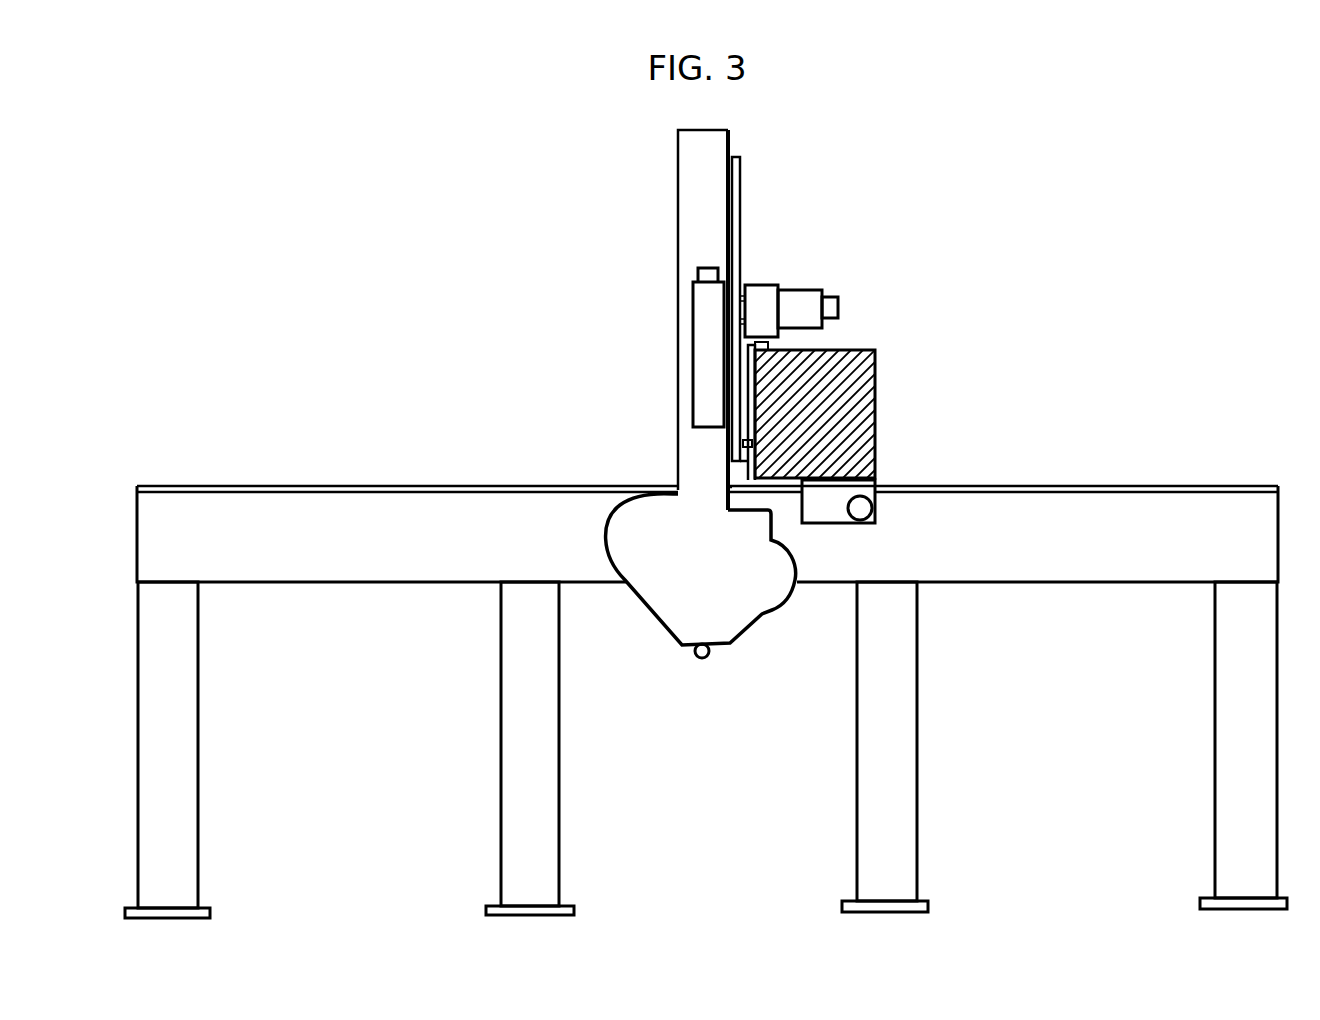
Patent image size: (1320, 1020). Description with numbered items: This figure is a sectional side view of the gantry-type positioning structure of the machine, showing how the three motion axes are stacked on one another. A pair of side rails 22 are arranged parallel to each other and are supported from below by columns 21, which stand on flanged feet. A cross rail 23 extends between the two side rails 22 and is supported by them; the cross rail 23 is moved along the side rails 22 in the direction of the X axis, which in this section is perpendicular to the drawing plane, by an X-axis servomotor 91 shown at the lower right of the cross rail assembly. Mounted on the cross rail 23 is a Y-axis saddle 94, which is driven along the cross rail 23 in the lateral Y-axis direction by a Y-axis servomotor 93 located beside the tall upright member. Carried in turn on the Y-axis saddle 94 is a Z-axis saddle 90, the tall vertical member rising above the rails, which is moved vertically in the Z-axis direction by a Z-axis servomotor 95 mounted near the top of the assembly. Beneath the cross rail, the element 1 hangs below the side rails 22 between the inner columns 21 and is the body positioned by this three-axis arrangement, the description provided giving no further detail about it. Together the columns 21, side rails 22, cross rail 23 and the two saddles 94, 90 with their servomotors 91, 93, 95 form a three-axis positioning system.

The tool body 1 is at (673, 630).
The columns 21 is at (505, 817).
The side rails 22 is at (1098, 536).
The cross rail 23 is at (877, 403).
The Z-axis saddle 90 is at (727, 131).
The X-axis servomotor 91 is at (847, 522).
The Y-axis servomotor 93 is at (696, 292).
The Y-axis saddle 94 is at (738, 402).
The Z-axis servomotor 95 is at (801, 297).